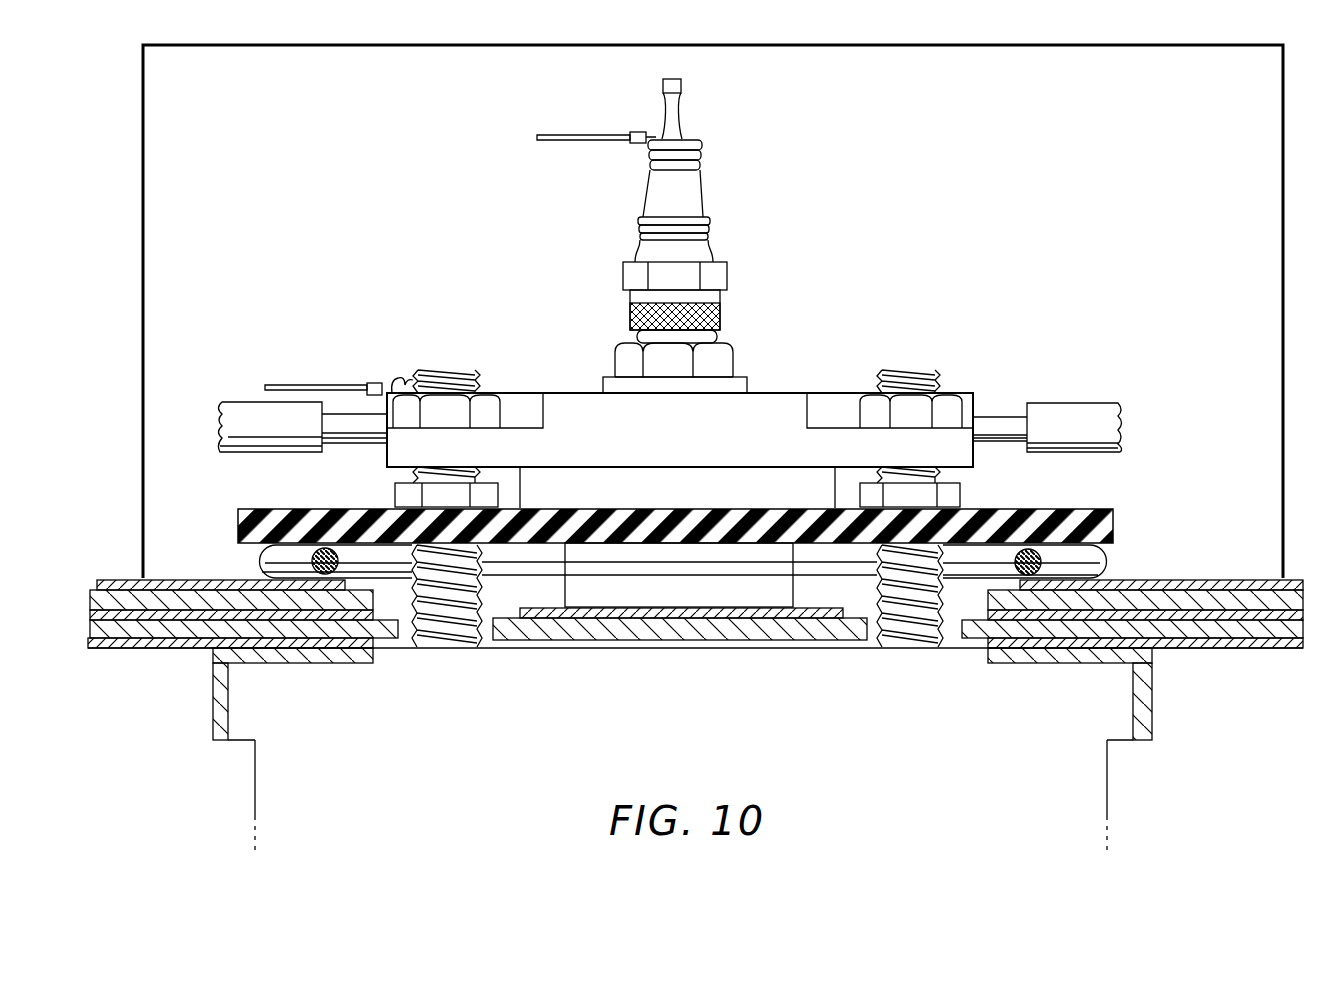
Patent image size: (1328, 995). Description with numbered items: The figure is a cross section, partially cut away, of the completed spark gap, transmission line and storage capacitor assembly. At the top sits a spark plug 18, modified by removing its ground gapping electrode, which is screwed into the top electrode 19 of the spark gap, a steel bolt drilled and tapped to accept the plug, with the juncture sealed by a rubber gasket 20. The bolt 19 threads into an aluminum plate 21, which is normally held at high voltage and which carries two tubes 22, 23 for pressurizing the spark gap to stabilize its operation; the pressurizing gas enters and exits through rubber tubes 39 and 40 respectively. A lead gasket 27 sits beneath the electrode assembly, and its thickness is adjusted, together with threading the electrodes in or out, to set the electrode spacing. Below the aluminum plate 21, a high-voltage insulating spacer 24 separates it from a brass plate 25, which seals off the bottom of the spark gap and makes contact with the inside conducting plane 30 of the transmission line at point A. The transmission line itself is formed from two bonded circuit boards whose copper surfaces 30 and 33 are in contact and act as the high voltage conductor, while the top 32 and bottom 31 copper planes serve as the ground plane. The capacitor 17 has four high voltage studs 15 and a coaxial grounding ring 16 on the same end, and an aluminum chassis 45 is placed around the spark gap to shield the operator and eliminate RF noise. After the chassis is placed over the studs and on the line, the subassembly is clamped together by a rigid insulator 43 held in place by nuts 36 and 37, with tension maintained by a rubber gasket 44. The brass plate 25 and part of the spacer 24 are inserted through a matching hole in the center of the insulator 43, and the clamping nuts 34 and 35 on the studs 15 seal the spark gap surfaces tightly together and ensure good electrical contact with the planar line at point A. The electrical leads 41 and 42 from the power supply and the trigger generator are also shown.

The high voltage studs 15 is at (912, 372).
The coaxial grounding ring 16 is at (1152, 705).
The capacitor 17 is at (1087, 775).
The spark plug 18 is at (697, 190).
The top electrode 19 is at (733, 355).
The rubber gasket 20 is at (637, 336).
The aluminum plate 21 is at (827, 393).
The tube 22 is at (338, 440).
The tube 23 is at (1013, 418).
The high-voltage insulating spacer 24 is at (590, 560).
The brass plate 25 is at (752, 605).
The lead gasket 27 is at (747, 385).
The inside conducting plane 30 is at (1303, 615).
The bottom ground plane 31 is at (1245, 650).
The top ground plane 32 is at (1290, 578).
The copper surface 33 is at (709, 660).
The clamping nut 34 is at (970, 393).
The clamping nut 35 is at (495, 410).
The nut 36 is at (955, 495).
The nut 37 is at (400, 490).
The rubber tube 39 is at (1120, 425).
The rubber tube 40 is at (222, 455).
The electrical lead 41 is at (282, 385).
The electrical lead 42 is at (590, 140).
The rigid insulator 43 is at (1115, 520).
The rubber gasket 44 is at (1085, 562).
The aluminum chassis 45 is at (1283, 275).
The point A is at (660, 620).